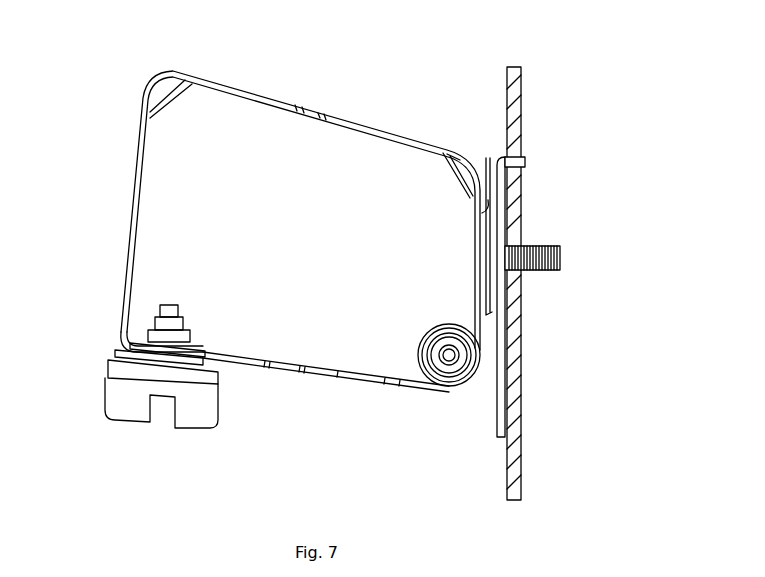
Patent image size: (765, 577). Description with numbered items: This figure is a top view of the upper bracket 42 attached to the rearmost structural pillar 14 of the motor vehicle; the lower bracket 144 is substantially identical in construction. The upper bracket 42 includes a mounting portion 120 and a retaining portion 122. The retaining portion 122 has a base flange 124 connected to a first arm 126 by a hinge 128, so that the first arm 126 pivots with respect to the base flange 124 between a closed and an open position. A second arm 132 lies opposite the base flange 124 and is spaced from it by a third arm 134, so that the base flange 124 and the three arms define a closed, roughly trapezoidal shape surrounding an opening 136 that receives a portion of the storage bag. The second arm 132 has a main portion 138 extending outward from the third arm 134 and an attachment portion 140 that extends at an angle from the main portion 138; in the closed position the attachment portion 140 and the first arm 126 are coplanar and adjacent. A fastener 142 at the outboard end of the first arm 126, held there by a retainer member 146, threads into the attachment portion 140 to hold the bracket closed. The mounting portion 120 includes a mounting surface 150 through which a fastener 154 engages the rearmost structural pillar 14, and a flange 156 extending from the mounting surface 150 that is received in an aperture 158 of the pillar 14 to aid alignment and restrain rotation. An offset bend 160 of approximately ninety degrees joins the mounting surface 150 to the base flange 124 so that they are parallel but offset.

The rearmost structural pillar 14 is at (522, 75).
The upper bracket 42 is at (272, 236).
The mounting portion 120 is at (538, 378).
The retaining portion 122 is at (455, 110).
The base flange 124 is at (477, 247).
The first arm 126 is at (320, 382).
The hinge 128 is at (462, 389).
The second arm 132 is at (148, 138).
The third arm 134 is at (298, 104).
The opening 136 is at (350, 180).
The main portion 138 is at (128, 257).
The attachment portion 140 is at (198, 330).
The fastener 142 is at (213, 422).
The lower bracket 144 is at (120, 352).
The retainer member 146 is at (210, 348).
The mounting surface 150 is at (573, 293).
The fastener 154 is at (550, 270).
The flange 156 is at (526, 162).
The aperture 158 is at (522, 140).
The offset bend 160 is at (489, 197).